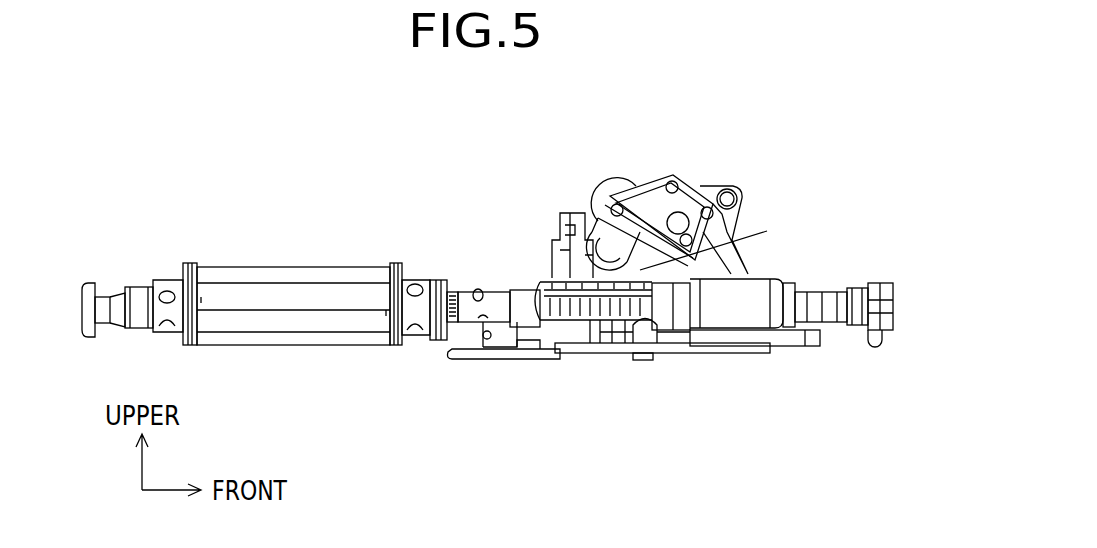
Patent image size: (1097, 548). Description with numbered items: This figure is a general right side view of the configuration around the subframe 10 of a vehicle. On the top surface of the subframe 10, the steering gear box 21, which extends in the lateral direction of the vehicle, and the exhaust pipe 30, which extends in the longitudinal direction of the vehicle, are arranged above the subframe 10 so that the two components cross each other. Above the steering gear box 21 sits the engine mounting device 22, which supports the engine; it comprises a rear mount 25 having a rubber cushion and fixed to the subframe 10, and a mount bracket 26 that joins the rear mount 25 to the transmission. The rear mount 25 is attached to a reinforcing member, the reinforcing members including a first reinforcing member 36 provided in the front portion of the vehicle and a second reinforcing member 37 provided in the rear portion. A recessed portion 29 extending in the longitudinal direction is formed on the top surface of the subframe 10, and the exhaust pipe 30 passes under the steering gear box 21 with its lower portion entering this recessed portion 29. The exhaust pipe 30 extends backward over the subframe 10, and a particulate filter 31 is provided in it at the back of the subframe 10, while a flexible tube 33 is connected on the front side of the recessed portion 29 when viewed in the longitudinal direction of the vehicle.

The subframe 10 is at (667, 355).
The steering gear box 21 is at (583, 215).
The engine mounting device 22 is at (692, 170).
The rear mount 25 is at (625, 178).
The mount bracket 26 is at (718, 188).
The recessed portion 29 is at (586, 340).
The exhaust pipe 30 is at (855, 302).
The particulate filter 31 is at (266, 277).
The flexible tube 33 is at (767, 317).
The first reinforcing member 36 is at (767, 232).
The second reinforcing member 37 is at (550, 250).